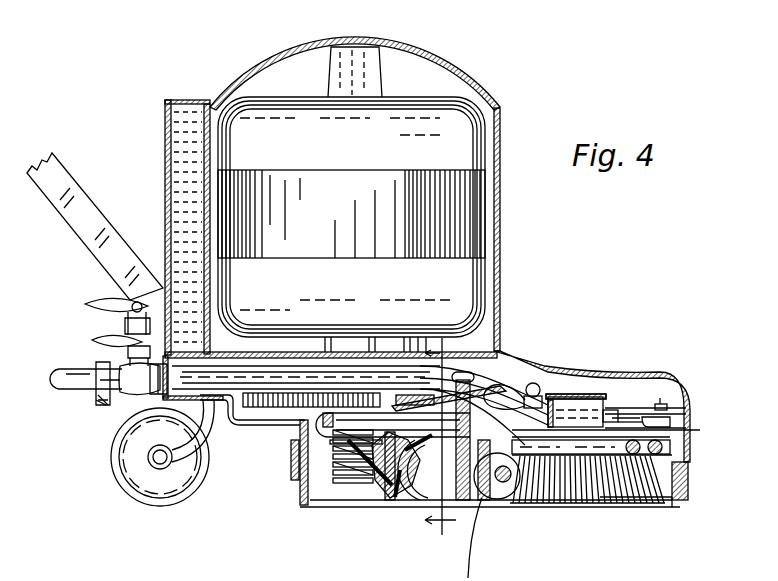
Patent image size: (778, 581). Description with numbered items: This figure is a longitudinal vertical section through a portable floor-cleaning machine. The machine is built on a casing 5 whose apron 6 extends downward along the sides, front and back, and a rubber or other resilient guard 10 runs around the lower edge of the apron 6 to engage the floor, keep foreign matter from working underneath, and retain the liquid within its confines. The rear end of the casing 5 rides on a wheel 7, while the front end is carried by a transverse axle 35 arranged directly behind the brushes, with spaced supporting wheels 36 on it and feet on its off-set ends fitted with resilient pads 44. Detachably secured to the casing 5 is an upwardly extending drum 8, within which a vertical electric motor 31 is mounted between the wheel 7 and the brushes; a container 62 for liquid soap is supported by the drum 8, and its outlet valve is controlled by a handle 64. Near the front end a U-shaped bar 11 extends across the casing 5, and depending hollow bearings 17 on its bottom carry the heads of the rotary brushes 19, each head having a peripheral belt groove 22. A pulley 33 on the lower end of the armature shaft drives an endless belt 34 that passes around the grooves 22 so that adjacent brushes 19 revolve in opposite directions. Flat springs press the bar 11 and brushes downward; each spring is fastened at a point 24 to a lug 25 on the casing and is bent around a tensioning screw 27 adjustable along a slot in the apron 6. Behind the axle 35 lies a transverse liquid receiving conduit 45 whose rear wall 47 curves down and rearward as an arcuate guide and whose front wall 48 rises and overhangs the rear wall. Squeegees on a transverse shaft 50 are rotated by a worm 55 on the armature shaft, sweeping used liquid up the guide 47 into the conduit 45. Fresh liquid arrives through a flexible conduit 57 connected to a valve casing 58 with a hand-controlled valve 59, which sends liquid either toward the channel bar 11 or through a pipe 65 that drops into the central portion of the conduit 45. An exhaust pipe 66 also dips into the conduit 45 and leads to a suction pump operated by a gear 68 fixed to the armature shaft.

The casing 5 is at (615, 418).
The apron 6 is at (333, 431).
The wheel 7 is at (135, 470).
The drum 8 is at (292, 63).
The resilient guard 10 is at (668, 500).
The U-shaped bar 11 is at (620, 424).
The hollow bearing 17 is at (603, 398).
The rotary brush 19 is at (562, 492).
The peripheral belt groove 22 is at (640, 505).
The spring fastening 24 is at (668, 406).
The lug 25 is at (668, 421).
The tensioning screw 27 is at (585, 397).
The electric motor 31 is at (272, 130).
The pulley 33 is at (332, 433).
The endless belt 34 is at (327, 418).
The transverse axle 35 is at (493, 482).
The supporting wheel 36 is at (498, 497).
The resilient pad 44 is at (470, 539).
The liquid receiving conduit 45 is at (483, 500).
The rear wall 47 is at (436, 480).
The front wall 48 is at (402, 408).
The transverse shaft 50 is at (380, 470).
The worm 55 is at (345, 464).
The flexible conduit 57 is at (80, 384).
The valve casing 58 is at (137, 388).
The hand-controlled valve 59 is at (128, 343).
The container 62 is at (173, 173).
The handle 64 is at (133, 312).
The pipe 65 is at (535, 383).
The exhaust pipe 66 is at (467, 497).
The gear 68 is at (407, 396).